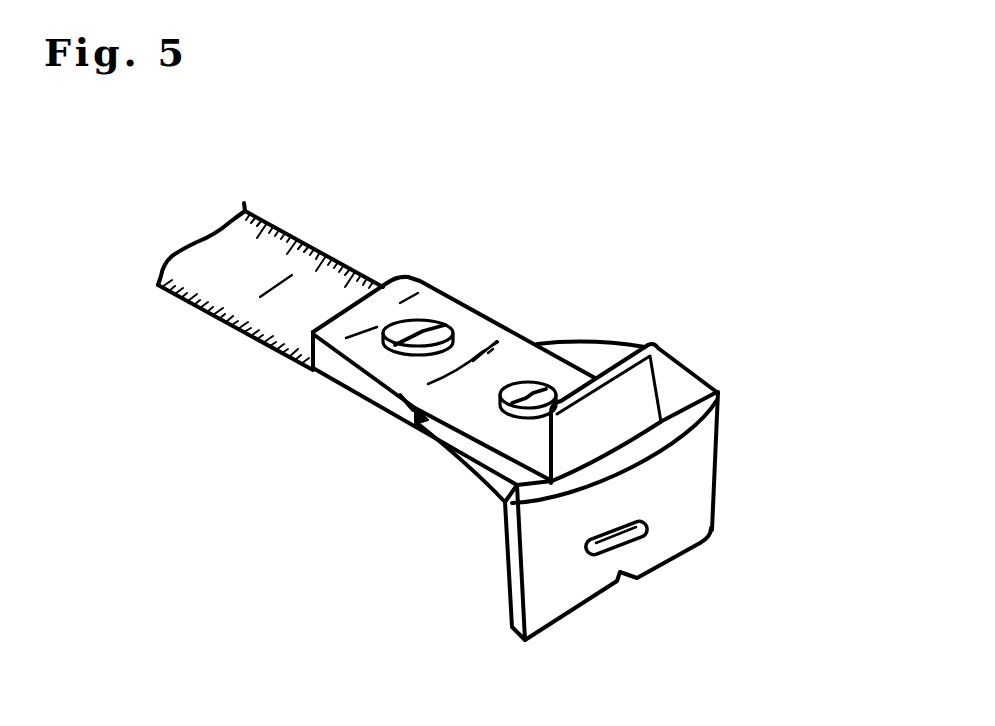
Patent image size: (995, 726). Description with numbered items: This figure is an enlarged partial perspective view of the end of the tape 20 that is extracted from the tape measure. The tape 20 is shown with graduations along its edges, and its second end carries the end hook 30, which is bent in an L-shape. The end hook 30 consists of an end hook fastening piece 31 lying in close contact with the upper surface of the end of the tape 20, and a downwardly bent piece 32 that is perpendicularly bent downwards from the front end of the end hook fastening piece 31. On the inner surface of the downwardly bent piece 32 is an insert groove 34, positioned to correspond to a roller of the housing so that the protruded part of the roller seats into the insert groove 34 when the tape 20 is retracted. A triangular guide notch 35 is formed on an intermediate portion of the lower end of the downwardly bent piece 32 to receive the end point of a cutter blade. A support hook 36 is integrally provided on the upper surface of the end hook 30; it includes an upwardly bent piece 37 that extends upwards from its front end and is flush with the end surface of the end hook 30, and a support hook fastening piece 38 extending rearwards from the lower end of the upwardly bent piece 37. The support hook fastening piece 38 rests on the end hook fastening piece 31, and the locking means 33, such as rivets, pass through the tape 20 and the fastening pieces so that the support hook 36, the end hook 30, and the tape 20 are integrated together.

The tape 20 is at (192, 299).
The end hook 30 is at (649, 485).
The end hook fastening piece 31 is at (360, 383).
The downwardly bent piece 32 is at (693, 514).
The locking means 33 is at (520, 390).
The insert groove 34 is at (510, 605).
The triangular guide notch 35 is at (618, 581).
The support hook 36 is at (588, 350).
The upwardly bent piece 37 is at (652, 383).
The support hook fastening piece 38 is at (465, 410).